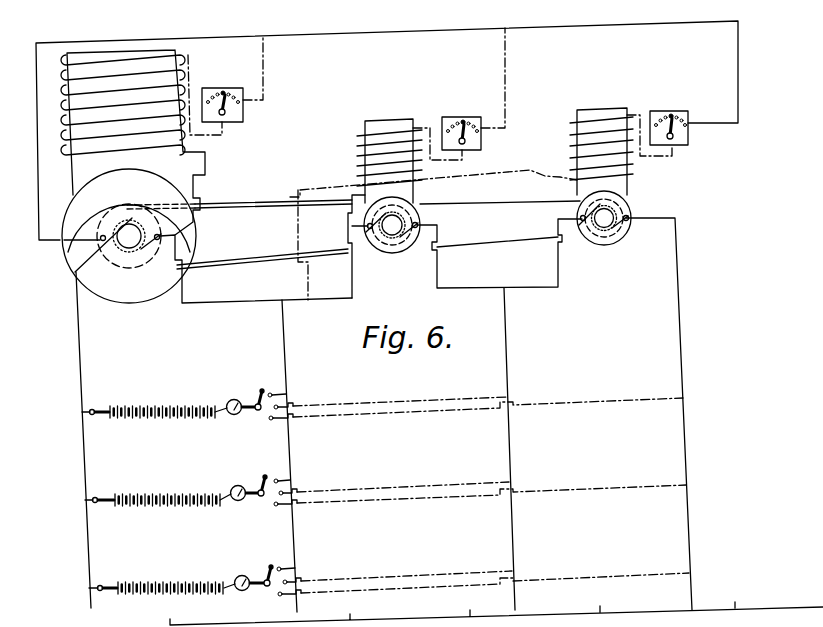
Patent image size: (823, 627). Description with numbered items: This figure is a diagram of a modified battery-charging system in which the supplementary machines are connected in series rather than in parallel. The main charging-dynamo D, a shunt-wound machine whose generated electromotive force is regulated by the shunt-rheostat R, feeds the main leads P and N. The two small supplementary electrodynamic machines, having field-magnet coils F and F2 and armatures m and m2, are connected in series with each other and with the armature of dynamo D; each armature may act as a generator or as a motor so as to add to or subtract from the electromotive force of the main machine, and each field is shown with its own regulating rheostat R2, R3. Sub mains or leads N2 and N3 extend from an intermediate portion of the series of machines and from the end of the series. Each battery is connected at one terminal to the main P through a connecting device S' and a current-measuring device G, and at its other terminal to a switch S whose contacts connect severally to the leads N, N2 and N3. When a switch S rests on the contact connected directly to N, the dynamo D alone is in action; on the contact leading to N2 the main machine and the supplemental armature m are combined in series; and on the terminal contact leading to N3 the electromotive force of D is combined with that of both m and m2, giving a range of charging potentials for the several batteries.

The charging-dynamo D is at (112, 105).
The shunt-rheostat R is at (222, 94).
The rheostat R2 is at (461, 120).
The rheostat R3 is at (669, 115).
The field-magnet coil F is at (358, 160).
The field-magnet coil F2 is at (584, 151).
The armature m is at (405, 225).
The armature m2 is at (620, 218).
The main lead P is at (85, 440).
The main lead N is at (294, 456).
The supplemental lead N2 is at (518, 449).
The supplemental lead N3 is at (669, 414).
The switch S is at (263, 485).
The connecting device S' is at (102, 490).
The current-measuring device G is at (238, 507).